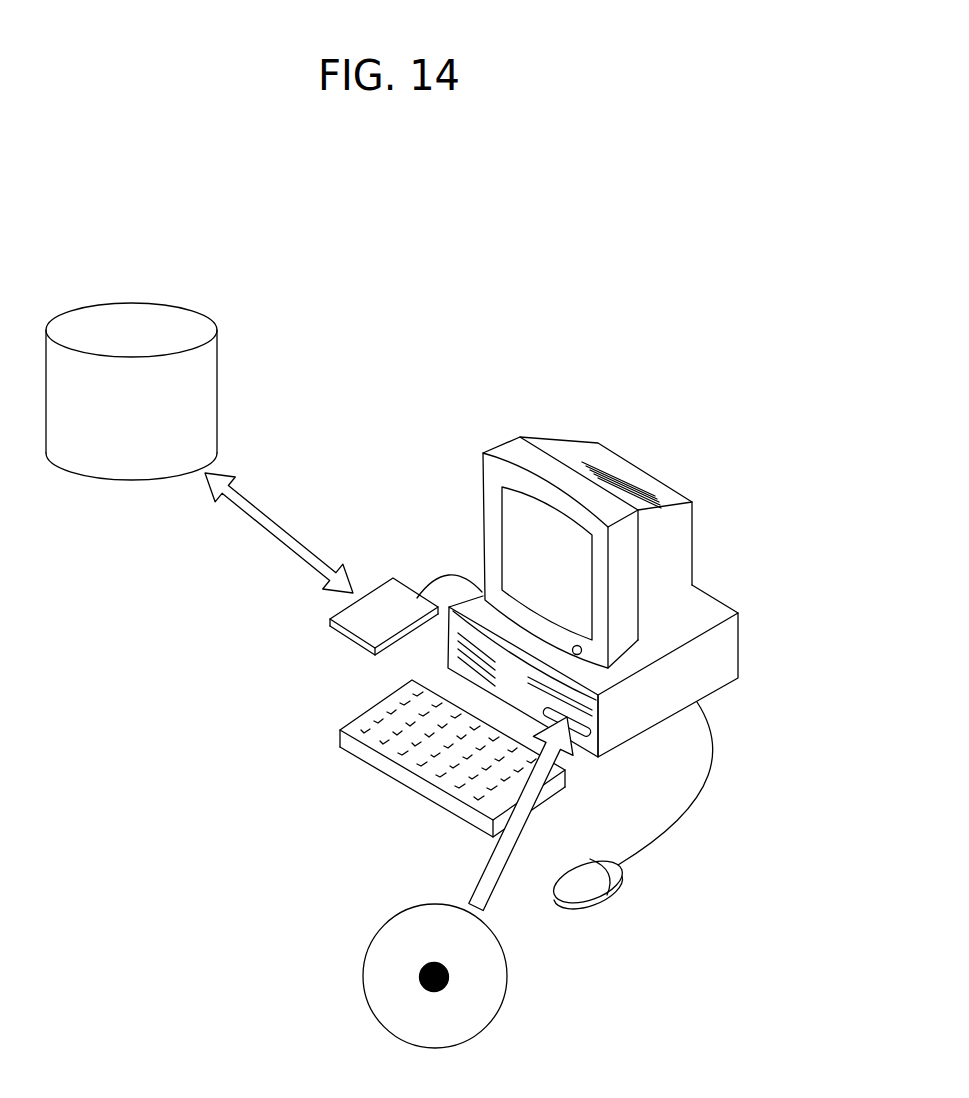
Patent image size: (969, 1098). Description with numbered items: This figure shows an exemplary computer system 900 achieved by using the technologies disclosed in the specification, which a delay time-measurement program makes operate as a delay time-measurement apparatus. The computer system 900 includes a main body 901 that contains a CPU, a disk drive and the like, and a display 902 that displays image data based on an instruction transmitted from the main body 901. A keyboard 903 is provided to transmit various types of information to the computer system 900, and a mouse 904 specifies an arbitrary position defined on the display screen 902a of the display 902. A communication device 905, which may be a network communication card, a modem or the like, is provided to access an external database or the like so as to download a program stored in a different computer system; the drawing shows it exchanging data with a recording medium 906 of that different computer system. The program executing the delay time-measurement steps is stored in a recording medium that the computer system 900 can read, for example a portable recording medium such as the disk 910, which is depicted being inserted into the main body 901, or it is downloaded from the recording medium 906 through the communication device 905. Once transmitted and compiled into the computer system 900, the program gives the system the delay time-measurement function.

The computer system 900 is at (587, 592).
The main body 901 is at (738, 653).
The display 902 is at (590, 552).
The display screen 902a is at (500, 545).
The keyboard 903 is at (395, 782).
The mouse 904 is at (610, 900).
The communication device 905 is at (347, 638).
The recording medium 906 is at (218, 377).
The disk 910 is at (505, 1000).